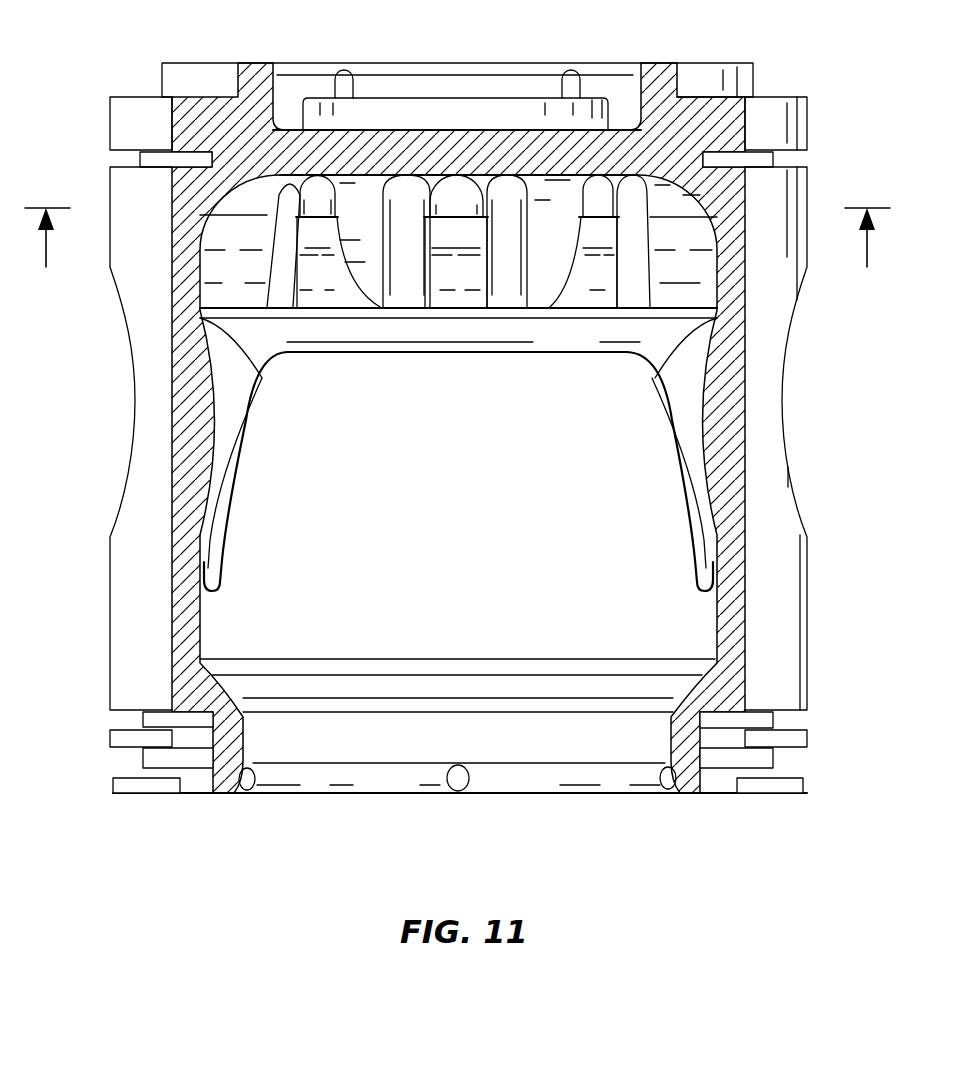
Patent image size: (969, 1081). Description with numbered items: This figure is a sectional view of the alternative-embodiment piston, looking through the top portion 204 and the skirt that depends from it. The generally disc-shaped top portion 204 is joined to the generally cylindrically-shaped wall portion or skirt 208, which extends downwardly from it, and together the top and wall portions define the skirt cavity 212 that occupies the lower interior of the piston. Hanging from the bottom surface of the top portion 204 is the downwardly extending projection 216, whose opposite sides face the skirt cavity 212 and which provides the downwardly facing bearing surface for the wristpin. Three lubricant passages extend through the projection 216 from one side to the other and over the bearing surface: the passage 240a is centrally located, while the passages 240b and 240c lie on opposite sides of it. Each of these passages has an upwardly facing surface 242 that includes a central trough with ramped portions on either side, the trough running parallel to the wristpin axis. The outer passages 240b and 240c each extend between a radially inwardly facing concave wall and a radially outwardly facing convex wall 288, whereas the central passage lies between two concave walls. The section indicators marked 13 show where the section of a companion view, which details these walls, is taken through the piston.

The top portion 204 is at (778, 118).
The wall portion or skirt 208 is at (767, 512).
The skirt cavity 212 is at (477, 533).
The projection 216 is at (400, 340).
The central lubricant passage 240a is at (457, 190).
The lubricant passage 240b is at (315, 197).
The lubricant passage 240c is at (597, 193).
The upwardly facing surface 242 is at (316, 274).
The radially outwardly facing convex wall 288 is at (370, 243).
The section line 13- 13 is at (457, 254).